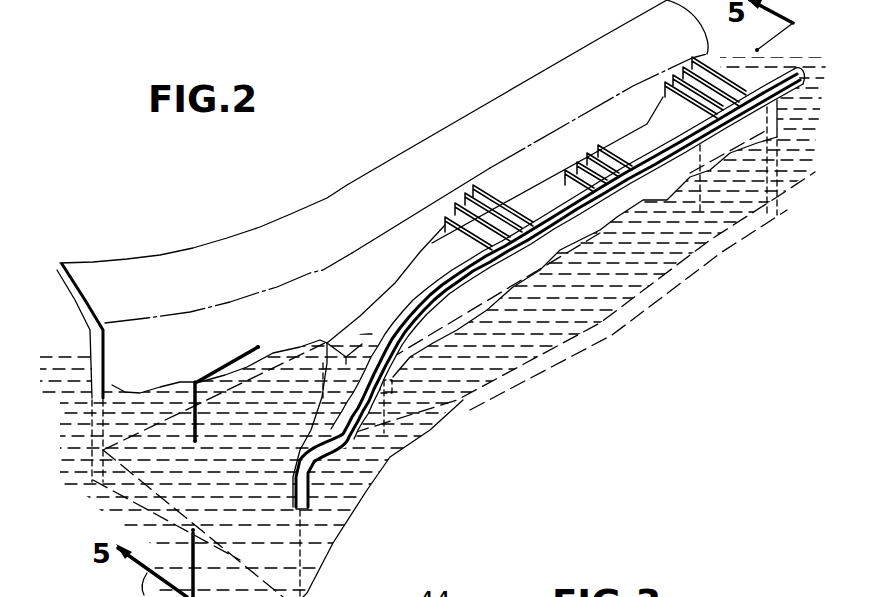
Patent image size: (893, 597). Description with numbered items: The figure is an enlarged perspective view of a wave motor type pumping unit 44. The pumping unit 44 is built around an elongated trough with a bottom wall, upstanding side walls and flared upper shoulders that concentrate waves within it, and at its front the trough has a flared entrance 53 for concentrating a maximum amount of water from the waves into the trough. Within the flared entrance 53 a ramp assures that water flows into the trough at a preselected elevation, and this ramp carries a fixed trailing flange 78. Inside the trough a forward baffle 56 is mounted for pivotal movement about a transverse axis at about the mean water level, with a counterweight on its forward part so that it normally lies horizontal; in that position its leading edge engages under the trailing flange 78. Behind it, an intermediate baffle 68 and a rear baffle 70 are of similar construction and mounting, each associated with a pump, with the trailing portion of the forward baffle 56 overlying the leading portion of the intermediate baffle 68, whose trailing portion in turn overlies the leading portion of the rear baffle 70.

The pumping unit 44 is at (400, 136).
The flared entrance 53 is at (93, 360).
The forward baffle 56 is at (433, 256).
The intermediate baffle 68 is at (538, 188).
The rear baffle 70 is at (630, 130).
The trailing flange 78 is at (345, 335).